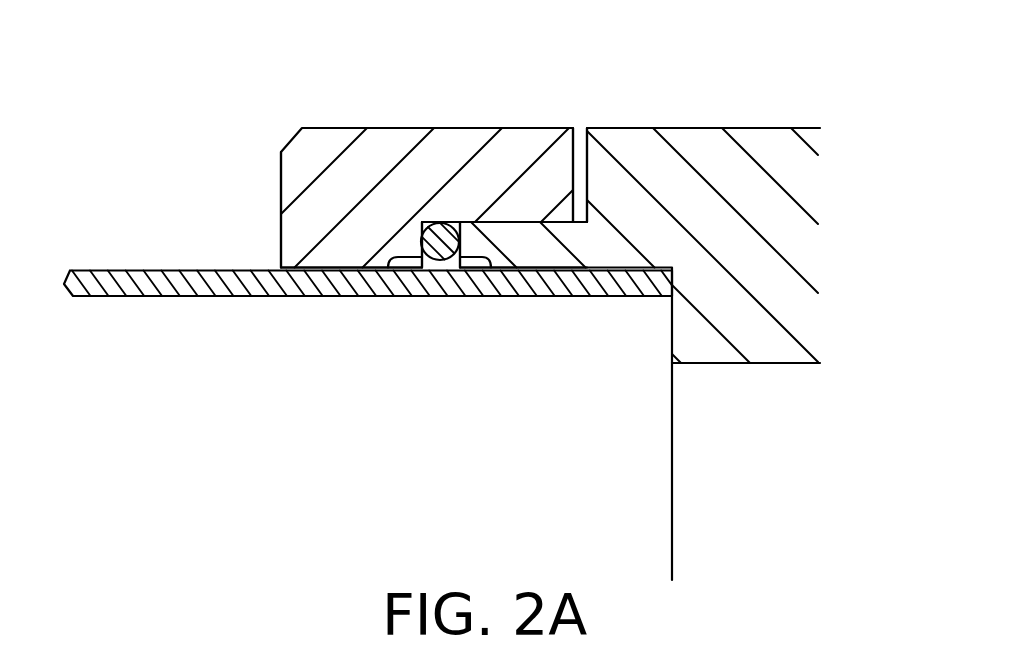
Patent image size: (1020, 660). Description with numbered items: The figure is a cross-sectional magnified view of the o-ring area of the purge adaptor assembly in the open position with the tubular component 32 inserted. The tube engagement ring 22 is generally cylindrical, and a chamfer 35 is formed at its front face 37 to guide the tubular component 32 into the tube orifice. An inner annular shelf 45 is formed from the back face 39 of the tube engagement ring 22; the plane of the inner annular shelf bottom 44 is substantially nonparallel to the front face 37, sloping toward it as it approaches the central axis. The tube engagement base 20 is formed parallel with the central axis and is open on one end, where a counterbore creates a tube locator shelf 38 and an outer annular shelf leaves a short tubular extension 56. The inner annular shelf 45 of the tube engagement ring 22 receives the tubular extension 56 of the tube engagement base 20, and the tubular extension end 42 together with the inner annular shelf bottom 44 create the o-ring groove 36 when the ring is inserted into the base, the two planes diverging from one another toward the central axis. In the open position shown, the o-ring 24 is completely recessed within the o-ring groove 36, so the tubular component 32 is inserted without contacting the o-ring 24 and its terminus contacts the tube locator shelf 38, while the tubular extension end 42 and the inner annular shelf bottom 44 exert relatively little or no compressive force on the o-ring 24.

The tube engagement base 20 is at (677, 128).
The tube engagement ring 22 is at (375, 133).
The o-ring 24 is at (440, 316).
The tubular component 32 is at (167, 270).
The chamfer 35 is at (330, 269).
The o-ring groove 36 is at (452, 222).
The front face 37 is at (280, 196).
The tube locator shelf 38 is at (670, 363).
The back face 39 is at (580, 195).
The tubular extension end 42 is at (491, 268).
The inner annular shelf bottom 44 is at (395, 268).
The inner annular shelf 45 is at (545, 220).
The tubular extension 56 is at (538, 242).